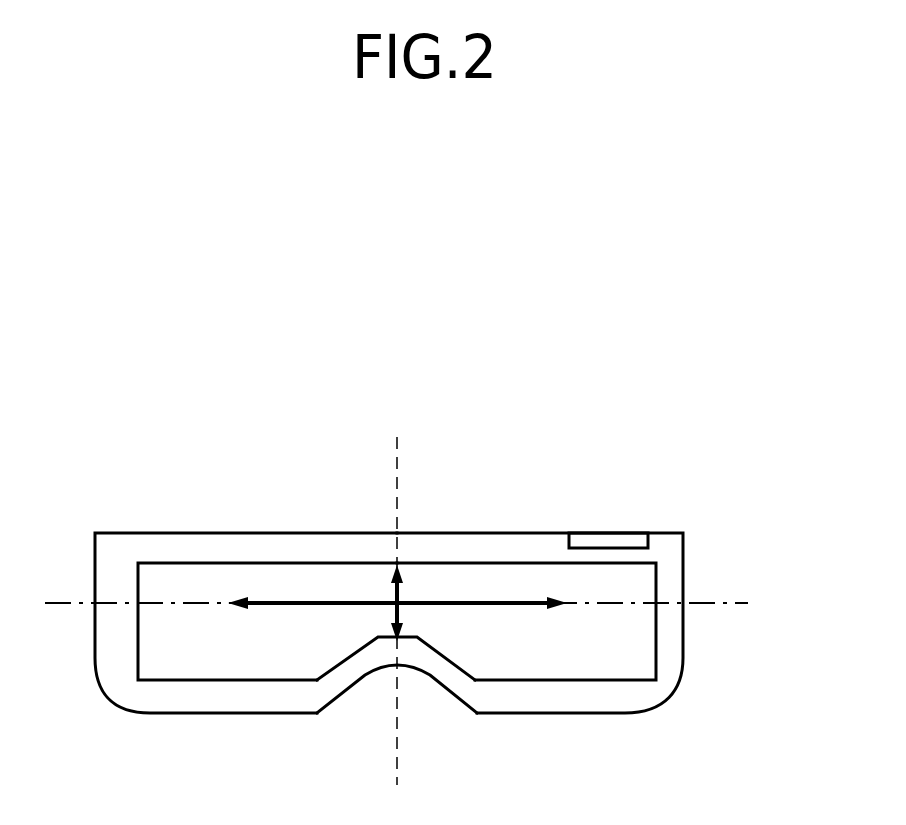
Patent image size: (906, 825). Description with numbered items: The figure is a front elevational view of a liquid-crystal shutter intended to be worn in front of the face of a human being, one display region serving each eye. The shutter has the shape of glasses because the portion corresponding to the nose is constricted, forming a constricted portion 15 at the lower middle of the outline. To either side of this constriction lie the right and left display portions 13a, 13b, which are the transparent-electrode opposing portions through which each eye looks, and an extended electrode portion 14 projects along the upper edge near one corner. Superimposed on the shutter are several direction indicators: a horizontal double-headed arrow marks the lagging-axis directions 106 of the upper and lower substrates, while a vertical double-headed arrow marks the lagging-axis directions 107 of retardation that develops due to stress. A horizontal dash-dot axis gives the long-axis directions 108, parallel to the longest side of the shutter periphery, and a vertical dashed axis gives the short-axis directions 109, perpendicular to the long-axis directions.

The right display portion 13a is at (210, 663).
The left display portion 13b is at (590, 662).
The extended electrode portion 14 is at (607, 532).
The constricted portion 15 is at (388, 668).
The lagging-axis directions of upper and lower substrates 106 is at (262, 602).
The lagging-axis directions of retardation developing due to a stress 107 is at (405, 568).
The long-axis directions of the liquid-crystal shutter 108 is at (713, 603).
The short-axis directions of the liquid-crystal shutter 109 is at (397, 705).